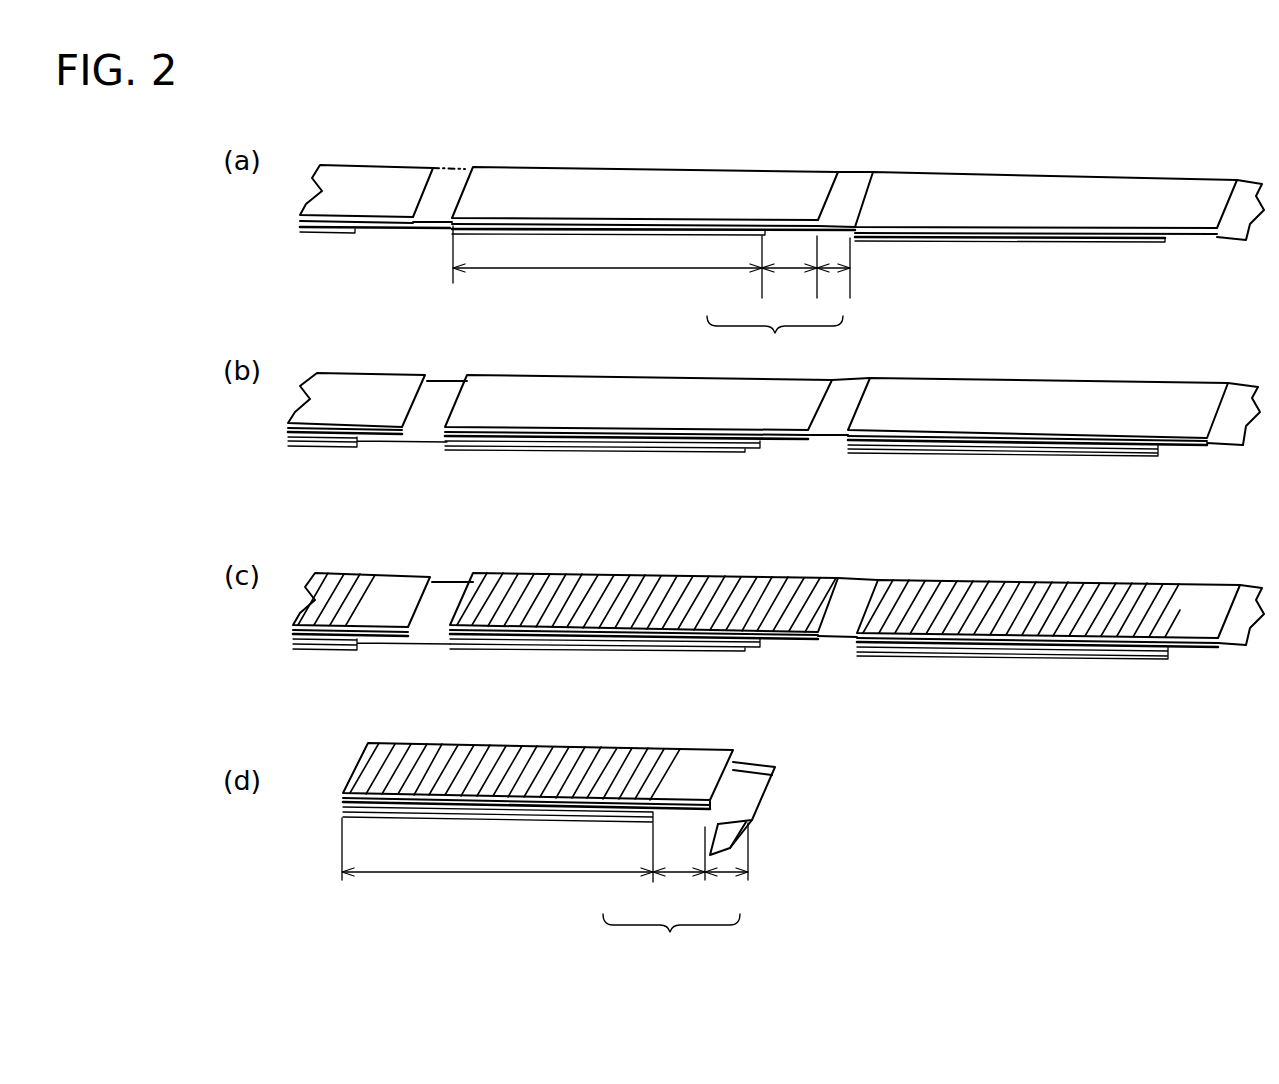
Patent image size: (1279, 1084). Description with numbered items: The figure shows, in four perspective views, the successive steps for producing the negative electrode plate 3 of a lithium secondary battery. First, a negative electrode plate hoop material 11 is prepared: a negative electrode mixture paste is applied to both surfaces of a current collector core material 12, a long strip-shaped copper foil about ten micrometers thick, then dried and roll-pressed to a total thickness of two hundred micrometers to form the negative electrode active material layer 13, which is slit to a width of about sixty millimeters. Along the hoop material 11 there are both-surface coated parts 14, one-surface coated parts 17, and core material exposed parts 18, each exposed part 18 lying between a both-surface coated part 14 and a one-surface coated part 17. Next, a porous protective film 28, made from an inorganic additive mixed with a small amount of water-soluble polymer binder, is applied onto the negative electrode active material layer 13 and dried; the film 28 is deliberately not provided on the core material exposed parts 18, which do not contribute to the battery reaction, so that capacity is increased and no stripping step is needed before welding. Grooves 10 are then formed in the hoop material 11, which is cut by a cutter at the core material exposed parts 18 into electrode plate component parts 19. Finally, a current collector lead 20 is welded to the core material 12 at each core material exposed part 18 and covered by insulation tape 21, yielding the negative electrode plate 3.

The negative electrode plate 3 is at (632, 742).
The grooves 10 is at (365, 580).
The negative electrode plate hoop material 11 is at (918, 168).
The current collector core material 12 is at (850, 180).
The negative electrode active material layer 13 is at (390, 178).
The both-surface coated part 14 is at (683, 270).
The one-surface coated part 17 is at (787, 277).
The core material exposed part 18 is at (830, 277).
The electrode plate component part 19 is at (723, 635).
The current collector lead 20 is at (752, 797).
The insulation tape 21 is at (752, 777).
The porous protective film 28 is at (380, 385).